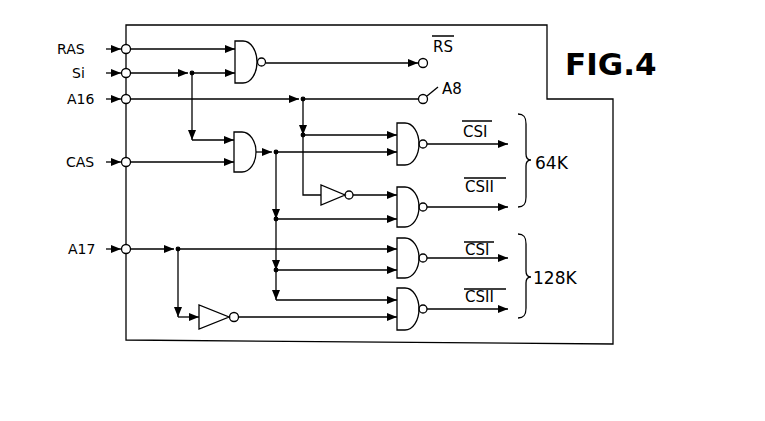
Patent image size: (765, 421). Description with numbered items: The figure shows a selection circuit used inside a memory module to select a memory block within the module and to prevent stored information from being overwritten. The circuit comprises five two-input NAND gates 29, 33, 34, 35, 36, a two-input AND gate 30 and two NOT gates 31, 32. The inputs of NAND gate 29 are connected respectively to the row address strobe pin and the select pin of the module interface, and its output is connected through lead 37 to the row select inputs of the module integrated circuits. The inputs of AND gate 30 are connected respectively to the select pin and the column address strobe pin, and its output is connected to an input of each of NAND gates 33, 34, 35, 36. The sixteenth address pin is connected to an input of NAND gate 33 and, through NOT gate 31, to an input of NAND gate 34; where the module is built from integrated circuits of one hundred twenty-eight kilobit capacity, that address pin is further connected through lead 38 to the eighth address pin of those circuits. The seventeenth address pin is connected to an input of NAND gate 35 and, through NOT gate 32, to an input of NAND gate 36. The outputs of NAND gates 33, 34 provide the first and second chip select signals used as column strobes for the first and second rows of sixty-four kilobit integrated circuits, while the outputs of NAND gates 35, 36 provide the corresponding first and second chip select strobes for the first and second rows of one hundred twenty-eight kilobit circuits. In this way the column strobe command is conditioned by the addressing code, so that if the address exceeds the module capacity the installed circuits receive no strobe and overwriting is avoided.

The NAND gate 29 is at (261, 38).
The AND gate 30 is at (248, 133).
The NOT gate 31 is at (324, 186).
The NOT gate 32 is at (207, 305).
The NAND gate 33 is at (411, 124).
The NAND gate 34 is at (419, 176).
The NAND gate 35 is at (419, 231).
The NAND gate 36 is at (420, 283).
The lead 37 is at (347, 63).
The lead 38 is at (335, 99).